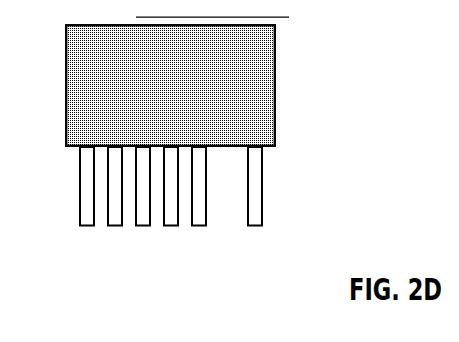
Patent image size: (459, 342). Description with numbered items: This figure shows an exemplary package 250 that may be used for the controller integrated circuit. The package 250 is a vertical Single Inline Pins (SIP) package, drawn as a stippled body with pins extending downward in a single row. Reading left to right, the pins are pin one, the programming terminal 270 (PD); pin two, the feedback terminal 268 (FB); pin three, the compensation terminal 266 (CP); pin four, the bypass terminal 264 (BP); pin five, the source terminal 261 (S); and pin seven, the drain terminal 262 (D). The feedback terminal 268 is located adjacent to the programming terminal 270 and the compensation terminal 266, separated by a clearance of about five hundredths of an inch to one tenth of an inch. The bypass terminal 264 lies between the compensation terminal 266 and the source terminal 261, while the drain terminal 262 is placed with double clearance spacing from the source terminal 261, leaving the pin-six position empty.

The package 250 is at (114, 17).
The programming terminal 270 is at (79, 272).
The feedback terminal 268 is at (105, 272).
The compensation terminal 266 is at (137, 272).
The bypass terminal 264 is at (172, 272).
The source terminal 261 is at (206, 272).
The drain terminal 262 is at (253, 268).